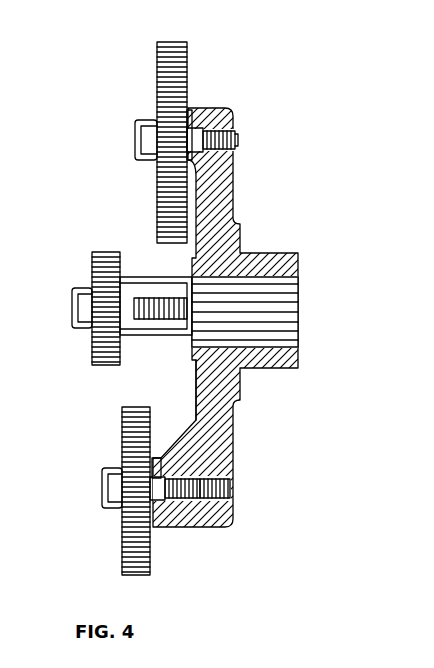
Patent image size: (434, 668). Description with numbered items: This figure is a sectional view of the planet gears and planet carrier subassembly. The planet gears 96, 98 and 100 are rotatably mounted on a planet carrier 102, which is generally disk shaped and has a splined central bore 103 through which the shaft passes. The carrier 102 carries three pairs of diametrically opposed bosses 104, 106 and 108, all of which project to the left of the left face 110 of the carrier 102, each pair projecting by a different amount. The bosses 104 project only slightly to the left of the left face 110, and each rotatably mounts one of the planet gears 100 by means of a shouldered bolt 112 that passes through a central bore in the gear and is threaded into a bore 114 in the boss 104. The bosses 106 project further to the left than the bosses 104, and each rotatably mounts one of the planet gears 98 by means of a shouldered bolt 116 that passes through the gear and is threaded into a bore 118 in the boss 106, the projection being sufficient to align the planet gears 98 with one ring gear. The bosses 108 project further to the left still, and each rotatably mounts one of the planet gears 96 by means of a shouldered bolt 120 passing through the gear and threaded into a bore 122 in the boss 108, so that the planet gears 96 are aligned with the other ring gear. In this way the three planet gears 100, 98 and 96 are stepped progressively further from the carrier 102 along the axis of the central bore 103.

The planet gear 96 is at (105, 252).
The planet gear 98 is at (135, 573).
The planet gear 100 is at (177, 43).
The planet carrier 102 is at (233, 175).
The splined central bore 103 is at (295, 318).
The boss 104 is at (192, 110).
The boss 106 is at (158, 460).
The boss 108 is at (137, 333).
The left face 110 is at (195, 382).
The shouldered bolt 112 is at (148, 122).
The bore 114 is at (238, 140).
The shouldered bolt 116 is at (110, 490).
The bore 118 is at (230, 495).
The shouldered bolt 120 is at (82, 302).
The bore 122 is at (155, 300).